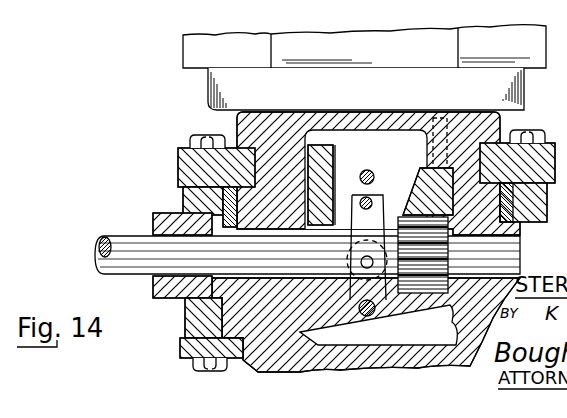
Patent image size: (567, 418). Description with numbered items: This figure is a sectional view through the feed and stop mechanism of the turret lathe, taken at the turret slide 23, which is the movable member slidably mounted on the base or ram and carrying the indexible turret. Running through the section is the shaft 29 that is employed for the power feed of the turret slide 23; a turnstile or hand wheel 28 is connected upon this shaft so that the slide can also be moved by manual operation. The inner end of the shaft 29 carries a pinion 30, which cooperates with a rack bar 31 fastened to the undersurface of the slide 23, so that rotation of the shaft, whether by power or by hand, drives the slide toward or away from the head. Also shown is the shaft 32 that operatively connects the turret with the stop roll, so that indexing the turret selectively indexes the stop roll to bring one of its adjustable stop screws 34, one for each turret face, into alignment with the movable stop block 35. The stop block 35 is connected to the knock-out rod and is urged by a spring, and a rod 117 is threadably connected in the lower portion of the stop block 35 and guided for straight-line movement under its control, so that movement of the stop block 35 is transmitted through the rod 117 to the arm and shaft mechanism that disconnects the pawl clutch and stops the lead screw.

The hand wheel 28 is at (518, 60).
The turret slide 23 is at (500, 128).
The shaft 29 is at (137, 247).
The pinion 30 is at (430, 295).
The rack bar 31 is at (413, 209).
The shaft 32 is at (370, 171).
The adjustable stop screw 34 is at (372, 199).
The stop block 35 is at (353, 200).
The rod 117 is at (373, 315).